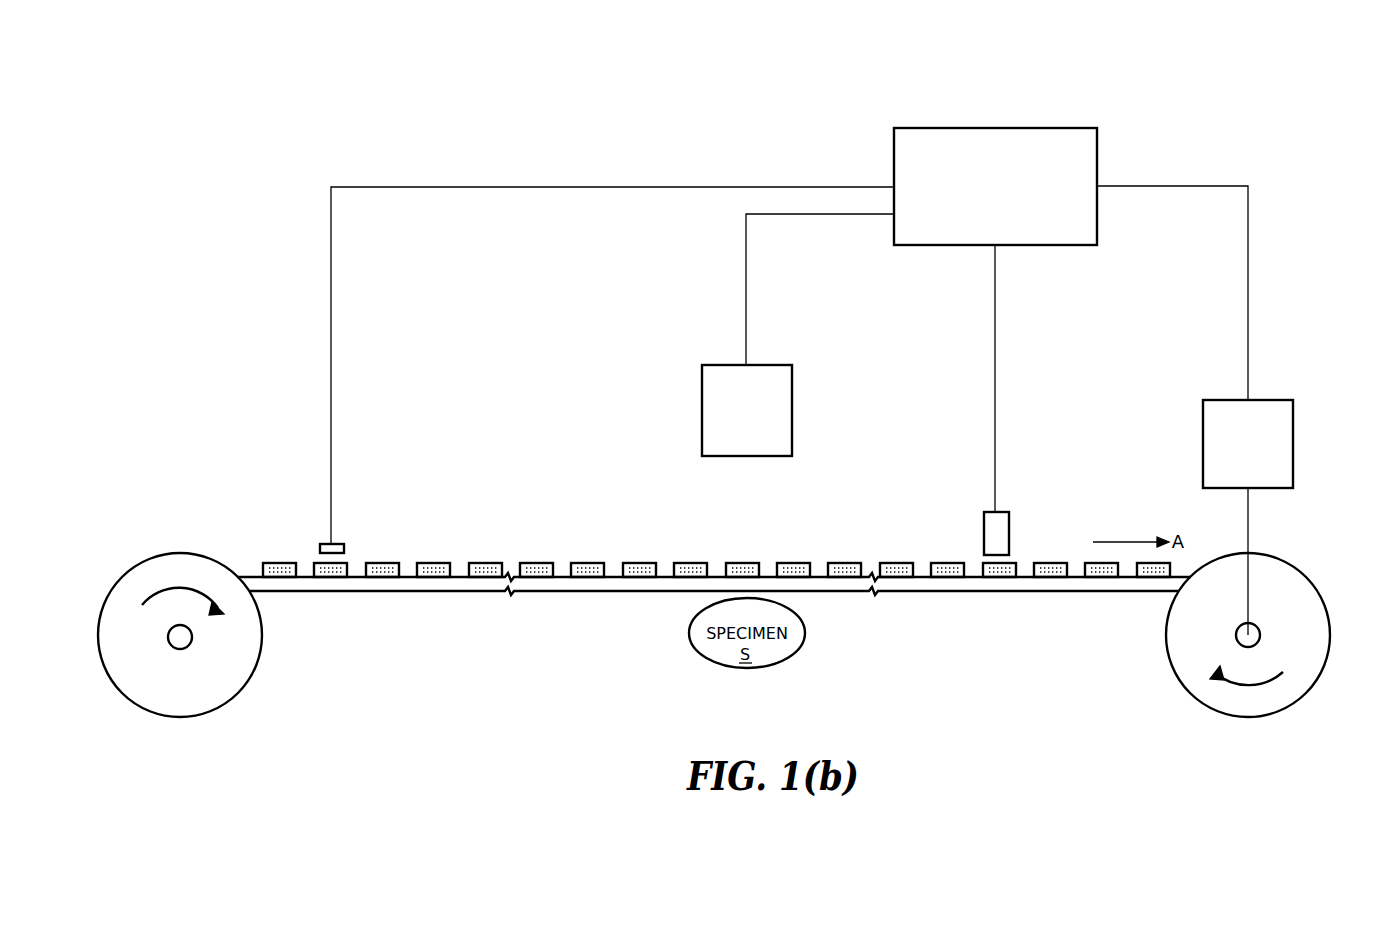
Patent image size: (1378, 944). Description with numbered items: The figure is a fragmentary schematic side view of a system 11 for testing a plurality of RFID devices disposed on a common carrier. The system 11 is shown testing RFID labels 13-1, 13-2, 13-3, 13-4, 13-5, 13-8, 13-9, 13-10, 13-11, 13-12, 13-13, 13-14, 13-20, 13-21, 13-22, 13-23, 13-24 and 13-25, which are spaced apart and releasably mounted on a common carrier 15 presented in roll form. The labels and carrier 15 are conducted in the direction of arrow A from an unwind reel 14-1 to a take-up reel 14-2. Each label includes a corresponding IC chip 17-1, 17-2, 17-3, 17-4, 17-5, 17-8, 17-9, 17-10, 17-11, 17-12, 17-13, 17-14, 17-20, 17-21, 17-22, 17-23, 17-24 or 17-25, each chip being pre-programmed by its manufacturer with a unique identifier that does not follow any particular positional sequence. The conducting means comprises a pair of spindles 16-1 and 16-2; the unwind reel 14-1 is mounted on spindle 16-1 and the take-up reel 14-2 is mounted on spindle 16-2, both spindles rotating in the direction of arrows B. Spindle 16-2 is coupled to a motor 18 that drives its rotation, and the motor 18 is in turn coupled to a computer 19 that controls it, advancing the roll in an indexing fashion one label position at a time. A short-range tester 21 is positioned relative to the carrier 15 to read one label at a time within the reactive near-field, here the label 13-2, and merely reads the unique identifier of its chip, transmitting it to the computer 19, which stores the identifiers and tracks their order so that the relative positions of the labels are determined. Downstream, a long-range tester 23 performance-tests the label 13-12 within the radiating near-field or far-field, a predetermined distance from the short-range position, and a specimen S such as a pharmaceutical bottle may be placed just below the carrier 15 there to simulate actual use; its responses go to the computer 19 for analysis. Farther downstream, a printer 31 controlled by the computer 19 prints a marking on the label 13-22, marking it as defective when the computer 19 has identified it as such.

The system 11 is at (244, 172).
The RFID label 13-1 is at (269, 563).
The RFID label 13-2 is at (318, 563).
The RFID label 13-3 is at (397, 563).
The RFID label 13-4 is at (449, 563).
The RFID label 13-5 is at (500, 563).
The RFID label 13-8 is at (552, 563).
The RFID label 13-9 is at (603, 563).
The RFID label 13-10 is at (654, 563).
The RFID label 13-11 is at (682, 563).
The RFID label 13-12 is at (756, 563).
The RFID label 13-13 is at (808, 563).
The RFID label 13-14 is at (859, 563).
The RFID label 13-20 is at (891, 563).
The RFID label 13-21 is at (939, 563).
The RFID label 13-22 is at (1010, 563).
The RFID label 13-23 is at (1059, 563).
The RFID label 13-24 is at (1085, 563).
The RFID label 13-25 is at (1172, 563).
The unwind reel 14-1 is at (133, 592).
The take-up reel 14-2 is at (1307, 605).
The common carrier 15 is at (248, 576).
The spindle 16-1 is at (186, 641).
The spindle 16-2 is at (1254, 641).
The IC chip 17-1 is at (280, 578).
The IC chip 17-2 is at (331, 578).
The IC chip 17-3 is at (383, 578).
The IC chip 17-4 is at (434, 578).
The IC chip 17-5 is at (486, 578).
The IC chip 17-8 is at (537, 578).
The IC chip 17-9 is at (588, 578).
The IC chip 17-10 is at (640, 578).
The IC chip 17-11 is at (691, 578).
The IC chip 17-12 is at (742, 565).
The IC chip 17-13 is at (795, 578).
The IC chip 17-14 is at (845, 578).
The IC chip 17-20 is at (898, 578).
The IC chip 17-21 is at (948, 578).
The IC chip 17-22 is at (1000, 578).
The IC chip 17-23 is at (1048, 578).
The IC chip 17-24 is at (1102, 578).
The IC chip 17-25 is at (1155, 578).
The motor 18 is at (1238, 469).
The computer 19 is at (984, 210).
The short-range tester 21 is at (340, 546).
The long-range tester 23 is at (720, 383).
The printer 31 is at (1017, 515).